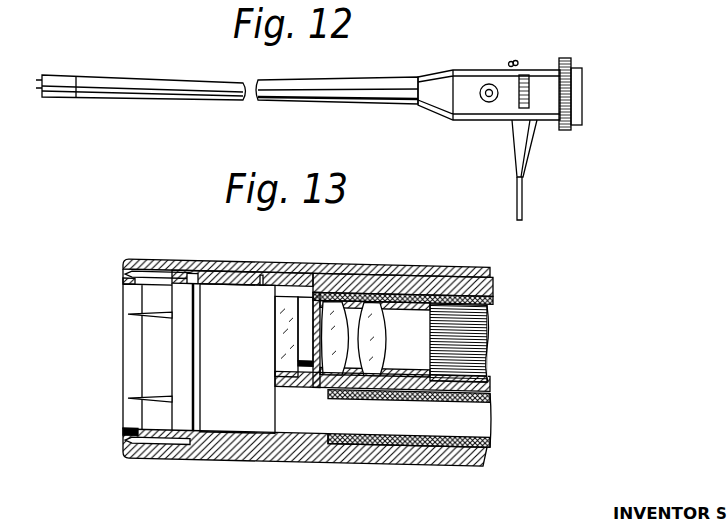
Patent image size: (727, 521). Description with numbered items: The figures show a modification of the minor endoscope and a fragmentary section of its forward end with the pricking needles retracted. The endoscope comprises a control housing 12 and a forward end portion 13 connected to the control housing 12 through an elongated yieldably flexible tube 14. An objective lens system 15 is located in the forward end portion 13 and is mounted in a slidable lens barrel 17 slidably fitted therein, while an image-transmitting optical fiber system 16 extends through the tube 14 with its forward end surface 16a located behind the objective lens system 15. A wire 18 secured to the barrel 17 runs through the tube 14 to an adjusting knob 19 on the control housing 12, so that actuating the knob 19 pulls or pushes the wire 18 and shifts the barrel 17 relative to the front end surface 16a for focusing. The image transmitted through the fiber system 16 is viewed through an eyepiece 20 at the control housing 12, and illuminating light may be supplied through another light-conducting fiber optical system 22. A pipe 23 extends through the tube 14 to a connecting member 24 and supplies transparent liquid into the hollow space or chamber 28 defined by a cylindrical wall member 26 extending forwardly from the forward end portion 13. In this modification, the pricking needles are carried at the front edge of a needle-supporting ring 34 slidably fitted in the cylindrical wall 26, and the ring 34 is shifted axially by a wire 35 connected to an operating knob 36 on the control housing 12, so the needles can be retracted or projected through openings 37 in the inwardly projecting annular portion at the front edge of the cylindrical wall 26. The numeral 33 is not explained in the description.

In FIG. 12, the control housing 12 is at (466, 80).
In FIG. 12, the forward end portion 13 is at (52, 88).
In FIG. 13, the forward end portion 13 is at (317, 472).
In FIG. 12, the elongated yieldably flexible tube 14 is at (140, 90).
In FIG. 13, the objective lens system 15 is at (342, 275).
In FIG. 13, the image-transmitting optical fiber system 16 is at (483, 372).
In FIG. 13, the forward end surface 16a is at (431, 378).
In FIG. 13, the slidable lens barrel 17 is at (407, 272).
In FIG. 13, the wire 18 is at (489, 319).
In FIG. 12, the adjusting knob 19 is at (535, 127).
In FIG. 12, the eyepiece 20 is at (580, 97).
In FIG. 12, the light-conducting fiber optical system 22 is at (523, 200).
In FIG. 13, the pipe 23 is at (397, 445).
In FIG. 12, the connecting member 24 is at (487, 102).
In FIG. 13, the cylindrical wall member 26 is at (215, 448).
In FIG. 13, the hollow space or chamber 28 is at (253, 418).
In FIG. 12, the connector 33 is at (402, 7).
In FIG. 13, the needle-supporting ring 34 is at (211, 268).
In FIG. 13, the wire 35 is at (478, 275).
In FIG. 12, the operating knob 36 is at (515, 61).
In FIG. 13, the openings 37 is at (123, 270).